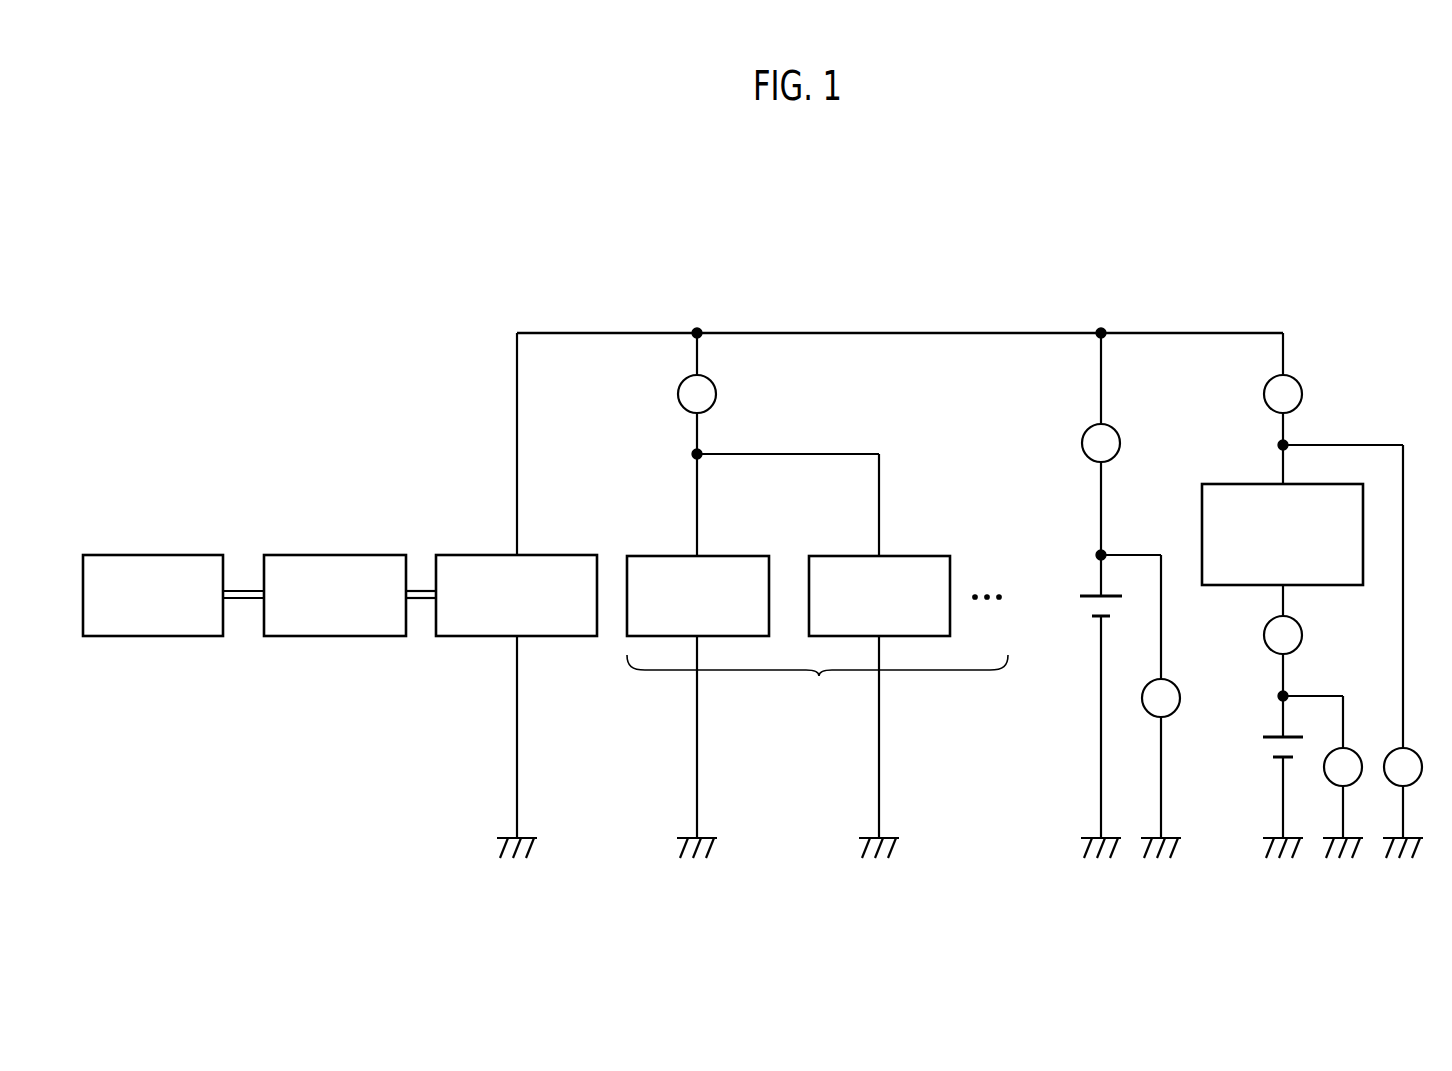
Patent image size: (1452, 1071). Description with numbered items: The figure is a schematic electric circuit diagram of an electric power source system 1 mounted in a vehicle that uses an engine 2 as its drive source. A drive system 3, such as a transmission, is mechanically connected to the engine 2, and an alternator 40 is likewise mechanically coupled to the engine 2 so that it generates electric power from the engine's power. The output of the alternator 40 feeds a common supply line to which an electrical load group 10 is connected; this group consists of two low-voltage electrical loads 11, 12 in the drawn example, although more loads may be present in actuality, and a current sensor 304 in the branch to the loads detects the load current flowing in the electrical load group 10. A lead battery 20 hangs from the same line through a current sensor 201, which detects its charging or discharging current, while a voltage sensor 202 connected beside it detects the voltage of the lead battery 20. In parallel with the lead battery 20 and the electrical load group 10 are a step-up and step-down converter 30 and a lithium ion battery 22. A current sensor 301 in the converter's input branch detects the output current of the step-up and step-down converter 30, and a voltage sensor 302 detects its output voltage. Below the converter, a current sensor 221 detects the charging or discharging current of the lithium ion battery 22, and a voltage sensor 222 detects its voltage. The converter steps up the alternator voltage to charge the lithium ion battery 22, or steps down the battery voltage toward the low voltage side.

The electric power source system 1 is at (201, 287).
The engine 2 is at (335, 555).
The drive system 3 is at (155, 555).
The alternator 40 is at (545, 555).
The electrical load group 10 is at (817, 579).
The electrical load 11 is at (728, 556).
The electrical load 12 is at (909, 556).
The current sensor 304 is at (713, 381).
The current sensor 201 is at (1117, 430).
The lead battery 20 is at (1092, 594).
The voltage sensor 202 is at (1174, 680).
The current sensor 301 is at (1299, 381).
The step-up and step-down converter 30 is at (1313, 484).
The current sensor 221 is at (1299, 622).
The lithium ion battery 22 is at (1273, 735).
The voltage sensor 222 is at (1356, 750).
The voltage sensor 302 is at (1415, 750).